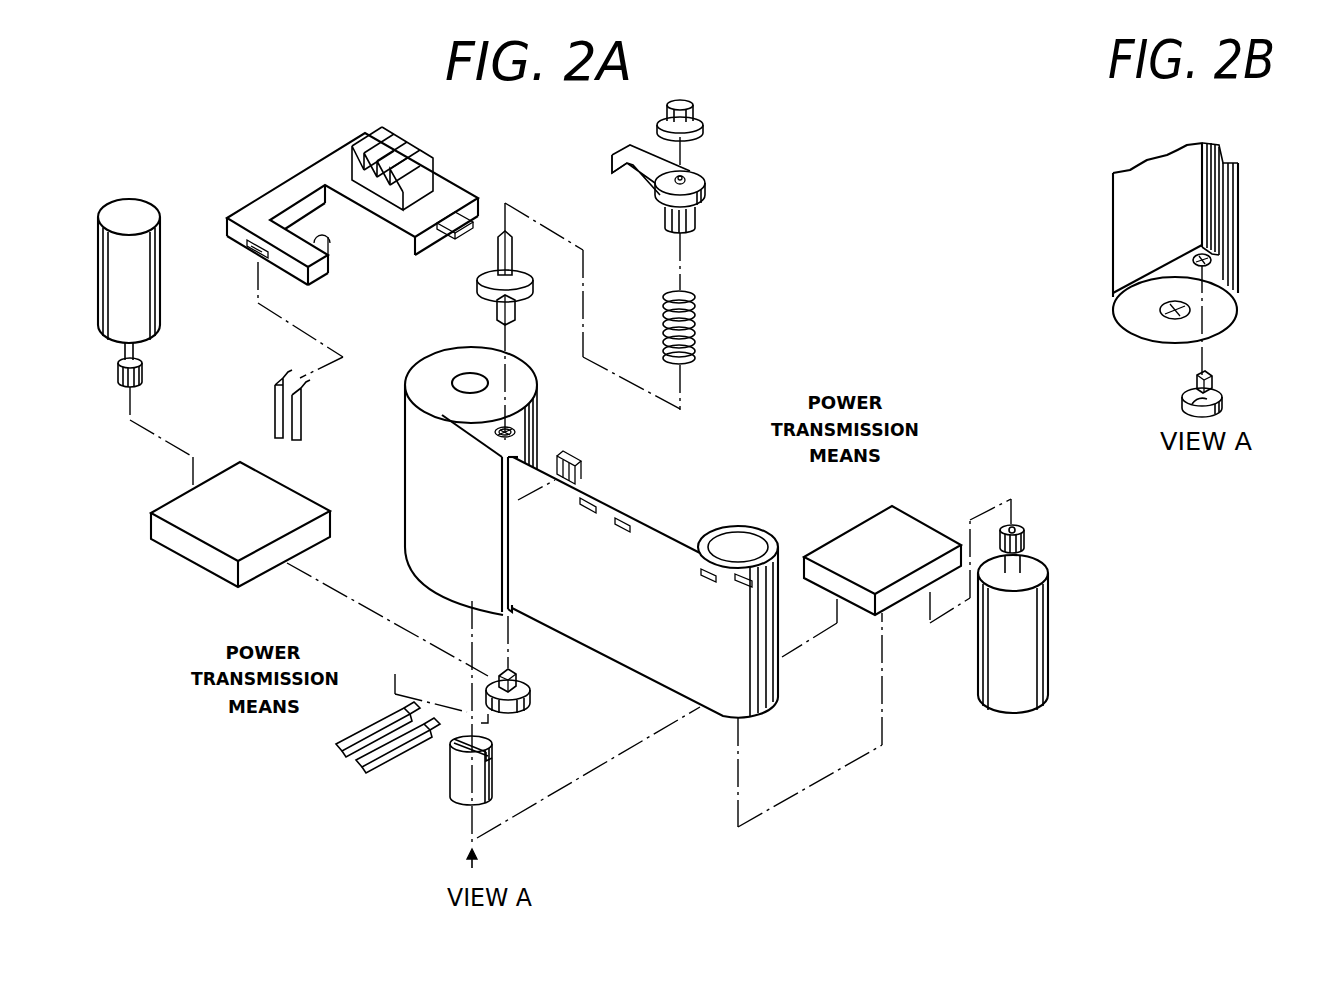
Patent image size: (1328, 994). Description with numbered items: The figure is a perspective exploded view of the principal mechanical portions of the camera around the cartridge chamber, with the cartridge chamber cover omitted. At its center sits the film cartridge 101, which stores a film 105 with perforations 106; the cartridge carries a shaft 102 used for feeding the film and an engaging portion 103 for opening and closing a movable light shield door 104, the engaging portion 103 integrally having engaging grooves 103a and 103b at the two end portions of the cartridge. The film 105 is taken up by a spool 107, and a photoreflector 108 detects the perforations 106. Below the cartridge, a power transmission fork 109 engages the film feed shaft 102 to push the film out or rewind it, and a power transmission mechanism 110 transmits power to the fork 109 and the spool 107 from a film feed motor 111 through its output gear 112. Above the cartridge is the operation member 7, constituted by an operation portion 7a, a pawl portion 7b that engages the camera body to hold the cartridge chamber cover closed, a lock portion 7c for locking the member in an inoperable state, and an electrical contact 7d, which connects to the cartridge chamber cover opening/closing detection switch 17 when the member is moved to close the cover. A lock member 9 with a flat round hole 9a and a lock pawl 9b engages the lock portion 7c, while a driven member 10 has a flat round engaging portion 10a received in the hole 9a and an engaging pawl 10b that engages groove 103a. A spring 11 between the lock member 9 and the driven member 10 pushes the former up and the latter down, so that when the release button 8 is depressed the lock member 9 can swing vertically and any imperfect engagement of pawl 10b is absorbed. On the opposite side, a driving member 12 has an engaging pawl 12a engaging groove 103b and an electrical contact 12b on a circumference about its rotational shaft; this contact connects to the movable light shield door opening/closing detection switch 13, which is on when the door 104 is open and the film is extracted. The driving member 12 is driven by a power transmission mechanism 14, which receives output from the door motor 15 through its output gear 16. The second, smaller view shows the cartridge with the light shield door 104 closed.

In FIG. 2A, the operation member 7 is at (298, 183).
In FIG. 2A, the operation portion 7a is at (395, 145).
In FIG. 2A, the pawl portion 7b is at (452, 236).
In FIG. 2A, the lock portion 7c is at (325, 242).
In FIG. 2A, the electrical contact 7d is at (240, 247).
In FIG. 2A, the release button 8 is at (692, 107).
In FIG. 2A, the lock member 9 is at (705, 200).
In FIG. 2A, the flat round hole 9a is at (686, 178).
In FIG. 2A, the lock pawl 9b is at (618, 175).
In FIG. 2A, the driven member 10 is at (512, 287).
In FIG. 2A, the flat round engaging portion 10a is at (512, 248).
In FIG. 2A, the engaging pawl 10b is at (497, 312).
In FIG. 2A, the spring 11 is at (694, 305).
In FIG. 2A, the driving member 12 is at (530, 702).
In FIG. 2B, the driving member 12 is at (1222, 400).
In FIG. 2A, the engaging pawl 12a is at (514, 672).
In FIG. 2B, the engaging pawl 12a is at (1213, 382).
In FIG. 2B, the electrical contact 12b is at (1190, 405).
In FIG. 2A, the movable light shield door opening/closing detection switch 13 is at (345, 748).
In FIG. 2A, the power transmission mechanism 14 is at (265, 575).
In FIG. 2A, the motor 15 is at (137, 210).
In FIG. 2A, the output gear 16 is at (122, 385).
In FIG. 2A, the cartridge chamber cover opening/closing detection switch 17 is at (282, 372).
In FIG. 2A, the film cartridge 101 is at (410, 480).
In FIG. 2B, the film cartridge 101 is at (1113, 236).
In FIG. 2B, the shaft 102 is at (1170, 318).
In FIG. 2A, the engaging portion 103 is at (518, 433).
In FIG. 2A, the engaging groove 103a is at (514, 428).
In FIG. 2B, the engaging groove 103b is at (1212, 260).
In FIG. 2B, the movable light shield door 104 is at (1215, 195).
In FIG. 2A, the film 105 is at (598, 504).
In FIG. 2A, the perforations 106 is at (632, 522).
In FIG. 2A, the spool 107 is at (752, 537).
In FIG. 2A, the photoreflector 108 is at (583, 468).
In FIG. 2A, the power transmission fork 109 is at (455, 785).
In FIG. 2A, the power transmission mechanism 110 is at (858, 540).
In FIG. 2A, the film feed motor 111 is at (1040, 685).
In FIG. 2A, the output gear 112 is at (1024, 535).